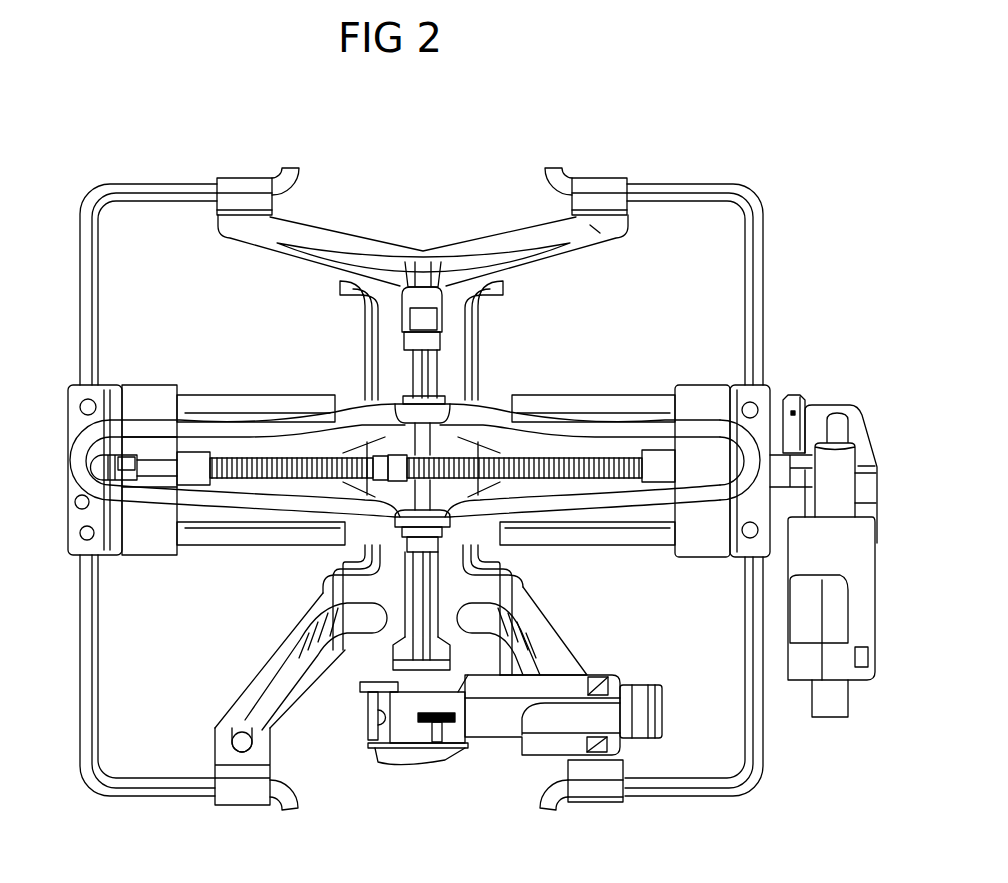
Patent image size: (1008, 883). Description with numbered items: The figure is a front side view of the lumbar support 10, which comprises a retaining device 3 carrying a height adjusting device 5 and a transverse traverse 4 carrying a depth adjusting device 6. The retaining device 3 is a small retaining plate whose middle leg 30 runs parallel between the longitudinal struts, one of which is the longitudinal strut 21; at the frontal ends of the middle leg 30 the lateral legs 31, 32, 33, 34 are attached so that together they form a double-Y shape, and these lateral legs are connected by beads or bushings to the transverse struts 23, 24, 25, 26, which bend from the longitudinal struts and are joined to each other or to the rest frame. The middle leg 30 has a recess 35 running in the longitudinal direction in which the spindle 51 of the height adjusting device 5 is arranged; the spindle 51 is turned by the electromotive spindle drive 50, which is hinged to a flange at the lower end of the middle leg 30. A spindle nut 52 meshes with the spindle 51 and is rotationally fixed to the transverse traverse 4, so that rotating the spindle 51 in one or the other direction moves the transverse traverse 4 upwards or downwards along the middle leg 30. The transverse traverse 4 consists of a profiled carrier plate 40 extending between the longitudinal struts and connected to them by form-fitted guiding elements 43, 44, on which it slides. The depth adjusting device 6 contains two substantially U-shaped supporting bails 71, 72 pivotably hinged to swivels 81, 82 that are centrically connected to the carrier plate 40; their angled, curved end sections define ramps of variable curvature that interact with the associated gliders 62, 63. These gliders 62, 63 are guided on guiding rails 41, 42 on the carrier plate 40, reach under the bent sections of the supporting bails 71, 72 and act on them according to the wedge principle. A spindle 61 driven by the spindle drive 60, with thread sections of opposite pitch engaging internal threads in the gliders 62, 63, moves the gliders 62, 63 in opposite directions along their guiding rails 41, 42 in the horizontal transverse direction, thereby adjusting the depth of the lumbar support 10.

The lumbar support 10 is at (425, 218).
The retaining device 3 is at (366, 321).
The transverse traverse 4 is at (207, 543).
The height adjusting device 5 is at (403, 368).
The depth adjusting device 6 is at (250, 541).
The longitudinal strut 21 is at (95, 300).
The transverse strut 23 is at (172, 193).
The transverse strut 24 is at (665, 190).
The transverse strut 25 is at (160, 797).
The transverse strut 26 is at (685, 792).
The middle leg 30 is at (455, 340).
The lateral leg 31 is at (253, 238).
The lateral leg 32 is at (597, 242).
The lateral leg 33 is at (262, 668).
The lateral leg 34 is at (563, 655).
The recess 35 is at (432, 303).
The carrier plate 40 is at (553, 410).
The guiding rail 41 is at (242, 395).
The guiding rail 42 is at (621, 538).
The guiding element 43 is at (72, 402).
The guiding element 44 is at (766, 390).
The spindle drive 50 is at (500, 748).
The spindle 51 is at (422, 376).
The spindle nut 52 is at (436, 540).
The spindle drive 60 is at (862, 568).
The spindle 61 is at (305, 479).
The glider 62 is at (148, 388).
The glider 63 is at (688, 388).
The supporting bail 71 is at (176, 552).
The supporting bail 72 is at (608, 418).
The swivel 81 is at (450, 400).
The swivel 82 is at (395, 527).